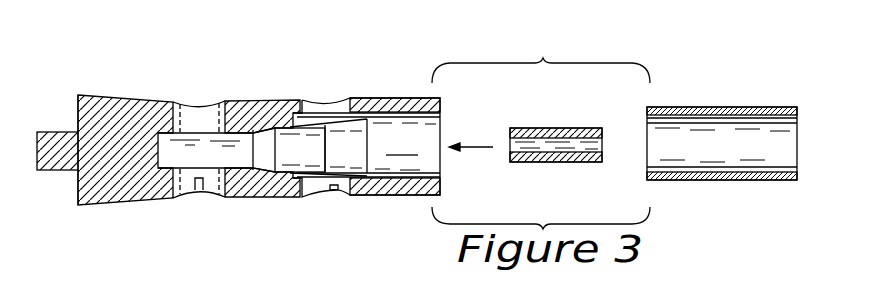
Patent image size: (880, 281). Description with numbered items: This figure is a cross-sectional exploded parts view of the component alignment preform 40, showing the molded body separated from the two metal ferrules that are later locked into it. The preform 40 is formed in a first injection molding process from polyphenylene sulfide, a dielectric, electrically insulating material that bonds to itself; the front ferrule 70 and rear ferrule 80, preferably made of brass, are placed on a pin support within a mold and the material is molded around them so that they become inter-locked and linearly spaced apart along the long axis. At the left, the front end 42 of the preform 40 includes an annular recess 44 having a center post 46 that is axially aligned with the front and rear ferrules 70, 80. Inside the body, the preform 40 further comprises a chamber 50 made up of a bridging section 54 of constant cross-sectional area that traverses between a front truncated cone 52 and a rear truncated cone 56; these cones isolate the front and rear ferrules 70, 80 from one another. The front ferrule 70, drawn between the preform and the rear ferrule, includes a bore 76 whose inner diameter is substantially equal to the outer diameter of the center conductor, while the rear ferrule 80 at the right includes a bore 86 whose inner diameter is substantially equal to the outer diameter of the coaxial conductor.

The component alignment preform 40 is at (165, 142).
The front end 42 is at (78, 96).
The annular recess 44 is at (73, 127).
The center post 46 is at (37, 150).
The chamber 50 is at (357, 165).
The front truncated cone 52 is at (272, 169).
The bridging section 54 is at (312, 171).
The rear truncated cone 56 is at (378, 171).
The front ferrule 70 is at (520, 133).
The bore 76 is at (547, 147).
The rear ferrule 80 is at (707, 176).
The bore 86 is at (727, 143).